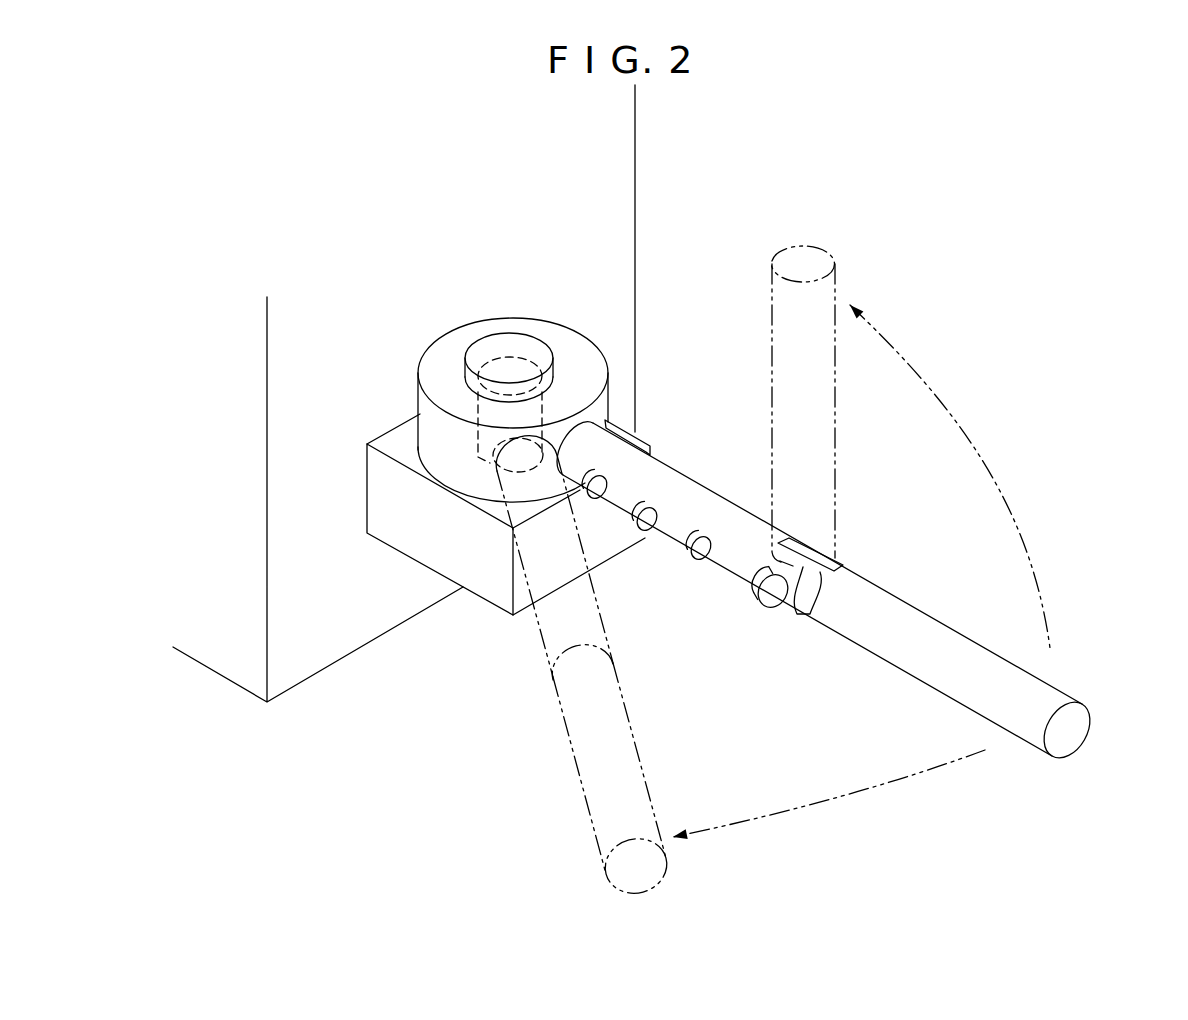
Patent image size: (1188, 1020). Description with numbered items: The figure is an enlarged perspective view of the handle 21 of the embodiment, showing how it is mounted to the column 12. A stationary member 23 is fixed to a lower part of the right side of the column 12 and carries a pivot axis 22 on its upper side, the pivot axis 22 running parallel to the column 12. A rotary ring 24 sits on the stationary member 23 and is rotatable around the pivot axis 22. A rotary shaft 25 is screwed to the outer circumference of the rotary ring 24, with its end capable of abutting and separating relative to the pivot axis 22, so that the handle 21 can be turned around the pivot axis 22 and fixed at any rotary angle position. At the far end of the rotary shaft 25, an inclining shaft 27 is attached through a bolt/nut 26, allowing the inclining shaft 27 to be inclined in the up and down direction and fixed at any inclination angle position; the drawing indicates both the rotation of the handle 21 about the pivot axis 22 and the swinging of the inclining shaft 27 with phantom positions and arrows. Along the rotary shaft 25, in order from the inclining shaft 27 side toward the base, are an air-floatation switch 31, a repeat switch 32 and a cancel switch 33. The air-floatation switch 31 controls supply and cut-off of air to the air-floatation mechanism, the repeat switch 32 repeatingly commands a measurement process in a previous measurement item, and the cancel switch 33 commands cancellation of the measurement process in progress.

The column 12 is at (623, 130).
The handle 21 is at (1077, 508).
The pivot axis 22 is at (503, 343).
The stationary member 23 is at (380, 508).
The rotary ring 24 is at (432, 358).
The rotary shaft 25 is at (713, 492).
The bolt/nut 26 is at (767, 608).
The inclining shaft 27 is at (837, 290).
The air-floatation switch 31 is at (702, 562).
The repeat switch 32 is at (643, 533).
The cancel switch 33 is at (597, 500).